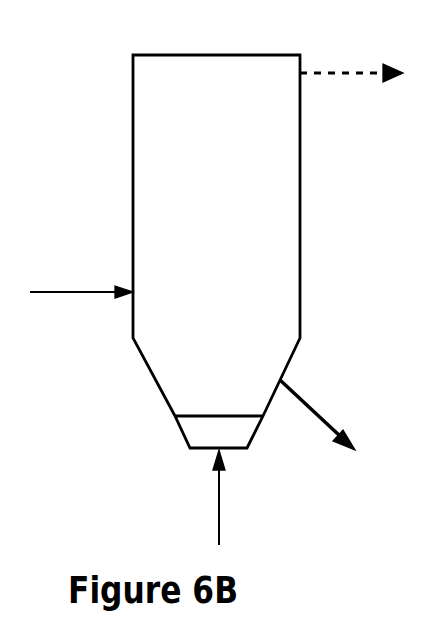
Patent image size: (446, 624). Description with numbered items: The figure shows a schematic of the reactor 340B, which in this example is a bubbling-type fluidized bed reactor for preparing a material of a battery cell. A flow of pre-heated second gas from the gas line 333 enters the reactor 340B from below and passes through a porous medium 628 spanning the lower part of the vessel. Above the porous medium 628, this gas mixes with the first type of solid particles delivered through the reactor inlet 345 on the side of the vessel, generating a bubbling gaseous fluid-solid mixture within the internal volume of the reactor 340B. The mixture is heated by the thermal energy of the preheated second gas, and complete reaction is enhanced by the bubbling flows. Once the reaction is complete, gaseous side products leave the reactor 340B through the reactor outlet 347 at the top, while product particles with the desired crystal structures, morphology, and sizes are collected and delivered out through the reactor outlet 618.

The reactor 340B is at (85, 132).
The reactor outlet 347 is at (349, 70).
The reactor inlet 345 is at (85, 294).
The porous medium 628 is at (210, 413).
The reactor outlet 618 is at (310, 402).
The gas line 333 is at (221, 504).